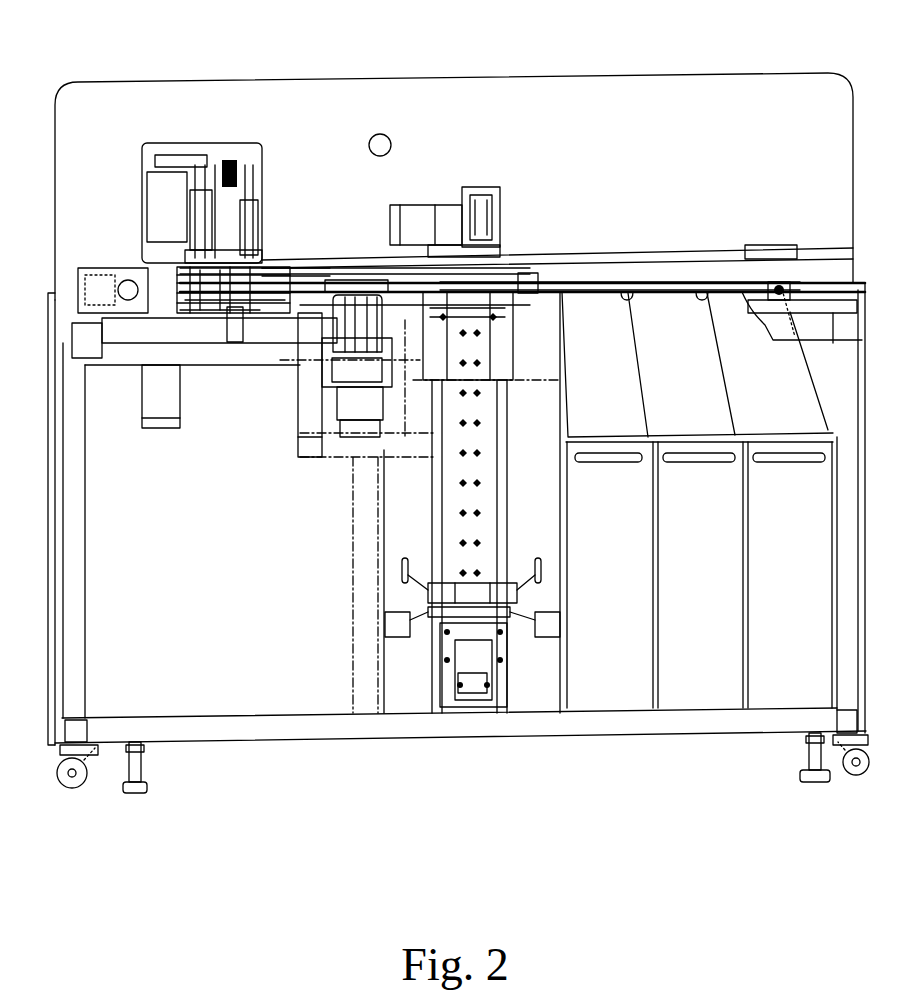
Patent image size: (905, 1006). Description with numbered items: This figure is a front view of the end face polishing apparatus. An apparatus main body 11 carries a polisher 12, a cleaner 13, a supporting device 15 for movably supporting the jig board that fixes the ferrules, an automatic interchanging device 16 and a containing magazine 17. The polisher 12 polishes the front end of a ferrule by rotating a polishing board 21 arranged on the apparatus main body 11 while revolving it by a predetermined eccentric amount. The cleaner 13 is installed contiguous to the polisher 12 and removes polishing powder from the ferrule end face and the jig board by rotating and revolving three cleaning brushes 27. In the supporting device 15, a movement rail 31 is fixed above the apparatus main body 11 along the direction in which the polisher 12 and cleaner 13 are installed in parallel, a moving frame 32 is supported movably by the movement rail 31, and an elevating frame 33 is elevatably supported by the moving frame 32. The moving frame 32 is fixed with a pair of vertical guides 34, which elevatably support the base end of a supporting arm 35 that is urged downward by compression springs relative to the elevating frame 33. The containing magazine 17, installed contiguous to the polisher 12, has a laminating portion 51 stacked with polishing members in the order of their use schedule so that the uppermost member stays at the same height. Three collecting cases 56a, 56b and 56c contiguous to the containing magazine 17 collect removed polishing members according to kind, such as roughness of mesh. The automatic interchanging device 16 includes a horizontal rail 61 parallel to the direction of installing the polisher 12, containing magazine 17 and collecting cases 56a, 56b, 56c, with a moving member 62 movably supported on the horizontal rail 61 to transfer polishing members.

The apparatus main body 11 is at (72, 410).
The polisher 12 is at (192, 178).
The cleaner 13 is at (285, 300).
The supporting device 15 is at (166, 159).
The automatic interchanging device 16 is at (471, 135).
The containing magazine 17 is at (403, 523).
The polishing board 21 is at (370, 293).
The cleaning brushes 27 is at (173, 277).
The movement rail 31 is at (300, 257).
The moving frame 32 is at (207, 307).
The elevating frame 33 is at (275, 300).
The vertical guides 34 is at (187, 280).
The supporting arm 35 is at (235, 262).
The laminating portion 51 is at (440, 617).
The collecting case 56a is at (590, 650).
The collecting case 56b is at (700, 660).
The collecting case 56c is at (778, 683).
The horizontal rail 61 is at (560, 255).
The moving member 62 is at (500, 227).